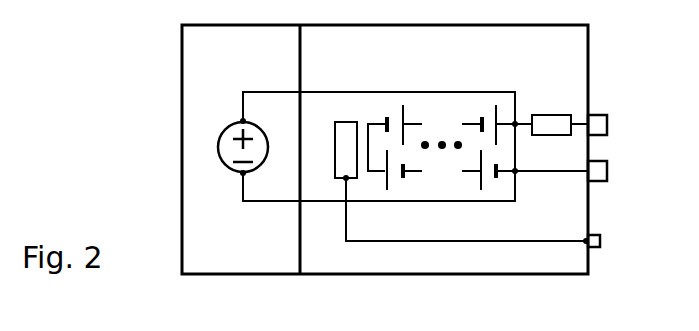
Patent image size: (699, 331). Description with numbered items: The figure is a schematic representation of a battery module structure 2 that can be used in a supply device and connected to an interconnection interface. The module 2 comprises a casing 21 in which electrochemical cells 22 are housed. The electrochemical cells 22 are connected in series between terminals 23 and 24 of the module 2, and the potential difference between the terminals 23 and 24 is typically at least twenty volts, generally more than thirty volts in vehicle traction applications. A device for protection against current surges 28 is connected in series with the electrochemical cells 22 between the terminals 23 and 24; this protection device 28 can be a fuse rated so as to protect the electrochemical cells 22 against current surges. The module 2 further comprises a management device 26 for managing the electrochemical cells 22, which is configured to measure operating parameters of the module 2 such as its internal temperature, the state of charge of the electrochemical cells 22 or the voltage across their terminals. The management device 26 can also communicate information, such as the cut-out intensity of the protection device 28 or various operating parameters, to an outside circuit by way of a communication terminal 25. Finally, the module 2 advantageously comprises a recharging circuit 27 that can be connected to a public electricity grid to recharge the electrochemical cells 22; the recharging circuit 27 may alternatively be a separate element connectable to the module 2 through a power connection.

The module structure 2 is at (117, 121).
The casing 21 is at (442, 274).
The electrochemical cells 22 is at (496, 105).
The terminal 23 is at (607, 125).
The terminal 24 is at (607, 171).
The communication terminal 25 is at (600, 241).
The management device 26 is at (346, 122).
The recharging circuit 27 is at (181, 152).
The device for protection against current surges 28 is at (551, 115).